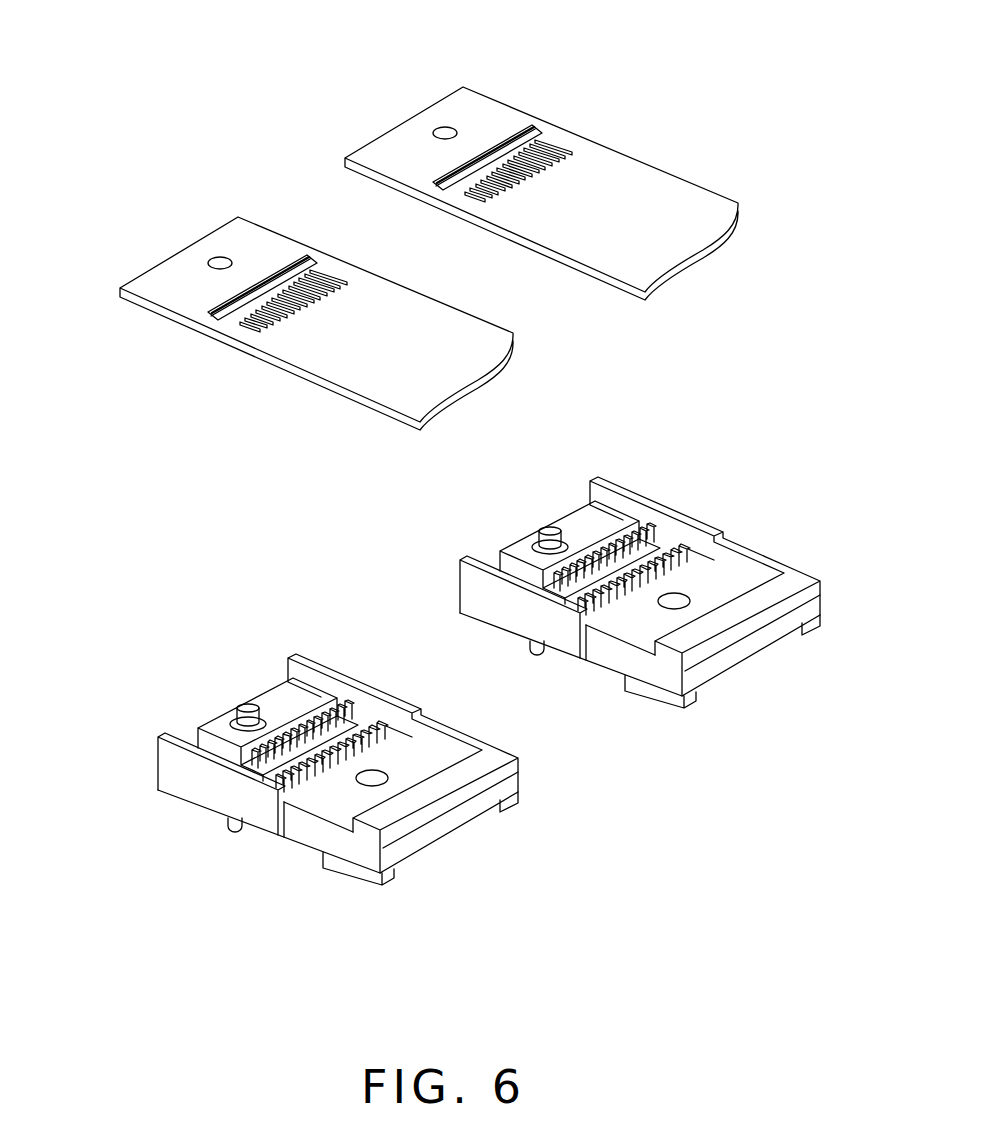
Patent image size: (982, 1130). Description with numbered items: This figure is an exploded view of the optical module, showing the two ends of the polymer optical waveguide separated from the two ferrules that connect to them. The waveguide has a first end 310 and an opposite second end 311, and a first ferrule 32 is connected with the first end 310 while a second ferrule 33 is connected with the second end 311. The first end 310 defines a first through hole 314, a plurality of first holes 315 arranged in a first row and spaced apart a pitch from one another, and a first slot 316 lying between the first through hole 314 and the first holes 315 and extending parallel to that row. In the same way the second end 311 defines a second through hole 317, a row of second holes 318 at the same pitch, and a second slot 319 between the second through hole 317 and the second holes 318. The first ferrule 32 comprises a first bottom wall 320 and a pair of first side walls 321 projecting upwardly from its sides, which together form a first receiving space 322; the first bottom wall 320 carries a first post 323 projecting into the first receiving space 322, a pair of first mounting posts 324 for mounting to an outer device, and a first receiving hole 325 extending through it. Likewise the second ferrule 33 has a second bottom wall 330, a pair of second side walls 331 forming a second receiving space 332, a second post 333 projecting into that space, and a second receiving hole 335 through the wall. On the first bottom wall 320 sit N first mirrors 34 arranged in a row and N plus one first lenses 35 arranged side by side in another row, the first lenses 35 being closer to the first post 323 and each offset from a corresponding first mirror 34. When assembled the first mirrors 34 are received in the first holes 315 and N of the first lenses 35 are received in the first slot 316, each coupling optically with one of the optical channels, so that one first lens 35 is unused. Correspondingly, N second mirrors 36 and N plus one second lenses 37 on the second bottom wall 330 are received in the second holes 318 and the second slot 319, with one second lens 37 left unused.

The first end 310 is at (305, 288).
The second end 311 is at (534, 159).
The first through hole 314 is at (221, 257).
The first holes 315 is at (252, 322).
The first slot 316 is at (228, 298).
The second through hole 317 is at (440, 128).
The second holes 318 is at (557, 147).
The second slot 319 is at (531, 128).
The first ferrule 32 is at (297, 746).
The first bottom wall 320 is at (283, 705).
The first side walls 321 is at (327, 660).
The first receiving space 322 is at (205, 746).
The first post 323 is at (245, 705).
The first mounting post 324 is at (237, 835).
The first receiving hole 325 is at (348, 718).
The second ferrule 33 is at (579, 591).
The second bottom wall 330 is at (583, 527).
The second side walls 331 is at (692, 537).
The second receiving space 332 is at (513, 567).
The second post 333 is at (547, 533).
The second receiving hole 335 is at (655, 540).
The first mirrors 34 is at (380, 728).
The first lenses 35 is at (286, 800).
The second mirrors 36 is at (677, 566).
The second lenses 37 is at (627, 530).